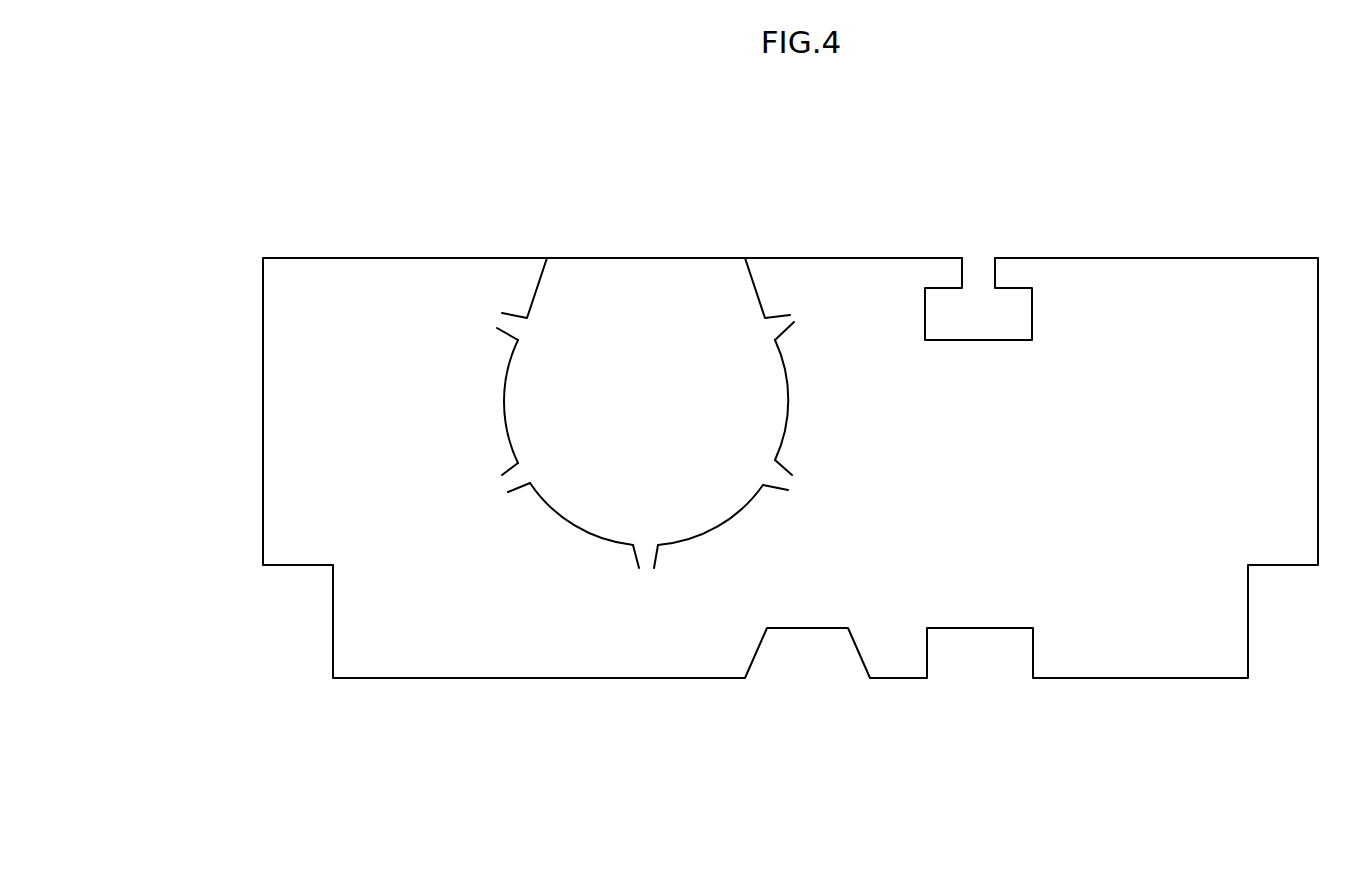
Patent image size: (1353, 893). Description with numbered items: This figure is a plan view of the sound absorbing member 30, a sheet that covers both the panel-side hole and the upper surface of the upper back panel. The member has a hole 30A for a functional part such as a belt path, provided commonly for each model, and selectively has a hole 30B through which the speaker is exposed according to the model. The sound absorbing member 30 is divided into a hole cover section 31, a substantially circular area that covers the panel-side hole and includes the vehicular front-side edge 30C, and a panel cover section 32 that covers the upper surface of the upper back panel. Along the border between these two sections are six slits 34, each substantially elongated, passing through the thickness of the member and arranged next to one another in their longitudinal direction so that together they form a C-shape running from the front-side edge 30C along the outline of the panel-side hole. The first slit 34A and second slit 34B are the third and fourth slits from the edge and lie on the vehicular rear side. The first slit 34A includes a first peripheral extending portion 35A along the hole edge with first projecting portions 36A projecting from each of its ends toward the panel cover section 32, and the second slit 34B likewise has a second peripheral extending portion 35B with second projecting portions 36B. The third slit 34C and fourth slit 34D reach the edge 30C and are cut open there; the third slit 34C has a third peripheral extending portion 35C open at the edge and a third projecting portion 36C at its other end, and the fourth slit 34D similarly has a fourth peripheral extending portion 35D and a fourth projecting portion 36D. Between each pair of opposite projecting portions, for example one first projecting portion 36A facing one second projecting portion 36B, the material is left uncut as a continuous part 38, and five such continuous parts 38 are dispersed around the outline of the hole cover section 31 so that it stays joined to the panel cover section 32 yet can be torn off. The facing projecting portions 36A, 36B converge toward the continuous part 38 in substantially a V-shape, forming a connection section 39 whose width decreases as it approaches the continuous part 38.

The sound absorbing member 30 is at (1293, 218).
The hole 30A is at (1032, 316).
The hole 30B is at (787, 388).
The vehicular front-side edge 30C is at (580, 256).
The hole cover section 31 is at (635, 303).
The panel cover section 32 is at (1128, 287).
The slits 34 is at (505, 402).
The first slit 34A is at (398, 750).
The second slit 34B is at (888, 750).
The third slit 34C is at (437, 170).
The fourth slit 34D is at (748, 170).
The first peripheral extending portion 35A is at (558, 515).
The second peripheral extending portion 35B is at (722, 525).
The third peripheral extending portion 35C is at (539, 280).
The fourth peripheral extending portion 35D is at (751, 274).
The first projecting portions 36A is at (517, 490).
The second projecting portions 36B is at (658, 560).
The third projecting portion 36C is at (512, 308).
The fourth projecting portion 36D is at (777, 315).
The continuous part 38 is at (500, 322).
The connection section 39 is at (513, 480).